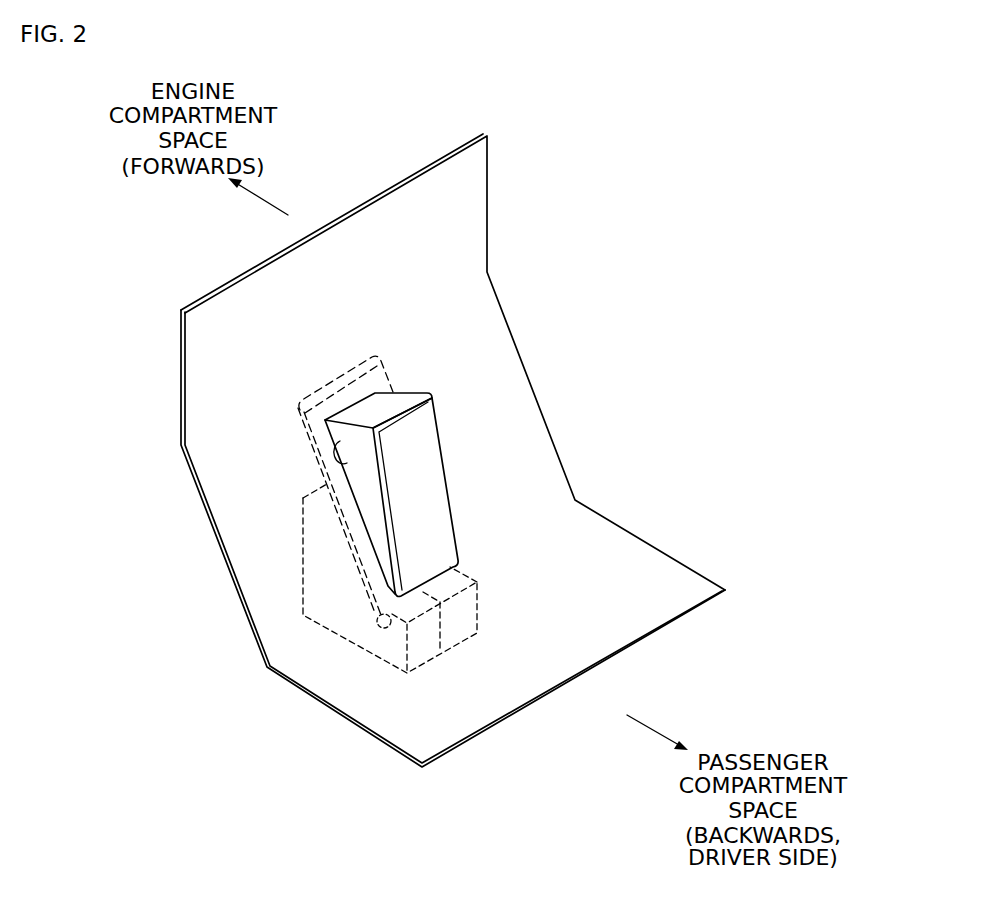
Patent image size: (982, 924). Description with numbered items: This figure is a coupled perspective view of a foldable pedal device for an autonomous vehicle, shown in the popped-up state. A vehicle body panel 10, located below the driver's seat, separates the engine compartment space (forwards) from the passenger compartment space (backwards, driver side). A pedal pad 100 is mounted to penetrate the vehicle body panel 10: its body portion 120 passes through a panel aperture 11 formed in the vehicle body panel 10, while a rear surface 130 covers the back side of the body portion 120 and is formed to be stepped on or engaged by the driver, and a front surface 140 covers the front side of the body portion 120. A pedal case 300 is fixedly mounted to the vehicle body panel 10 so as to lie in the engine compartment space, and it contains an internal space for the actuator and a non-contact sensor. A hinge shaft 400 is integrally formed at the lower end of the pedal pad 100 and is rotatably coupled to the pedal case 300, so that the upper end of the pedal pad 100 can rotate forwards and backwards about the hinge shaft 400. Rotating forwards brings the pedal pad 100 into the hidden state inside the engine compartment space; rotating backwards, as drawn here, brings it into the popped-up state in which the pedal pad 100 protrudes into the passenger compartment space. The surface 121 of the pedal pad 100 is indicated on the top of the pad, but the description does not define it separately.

The vehicle body panel 10 is at (535, 460).
The panel aperture 11 is at (347, 455).
The pedal pad 100 is at (398, 433).
The upper surface of pedal pad 121 is at (387, 400).
The rear surface 130 is at (430, 517).
The body portion 120 is at (370, 493).
The front surface 140 is at (307, 402).
The pedal case 300 is at (320, 567).
The hinge shaft 400 is at (373, 628).